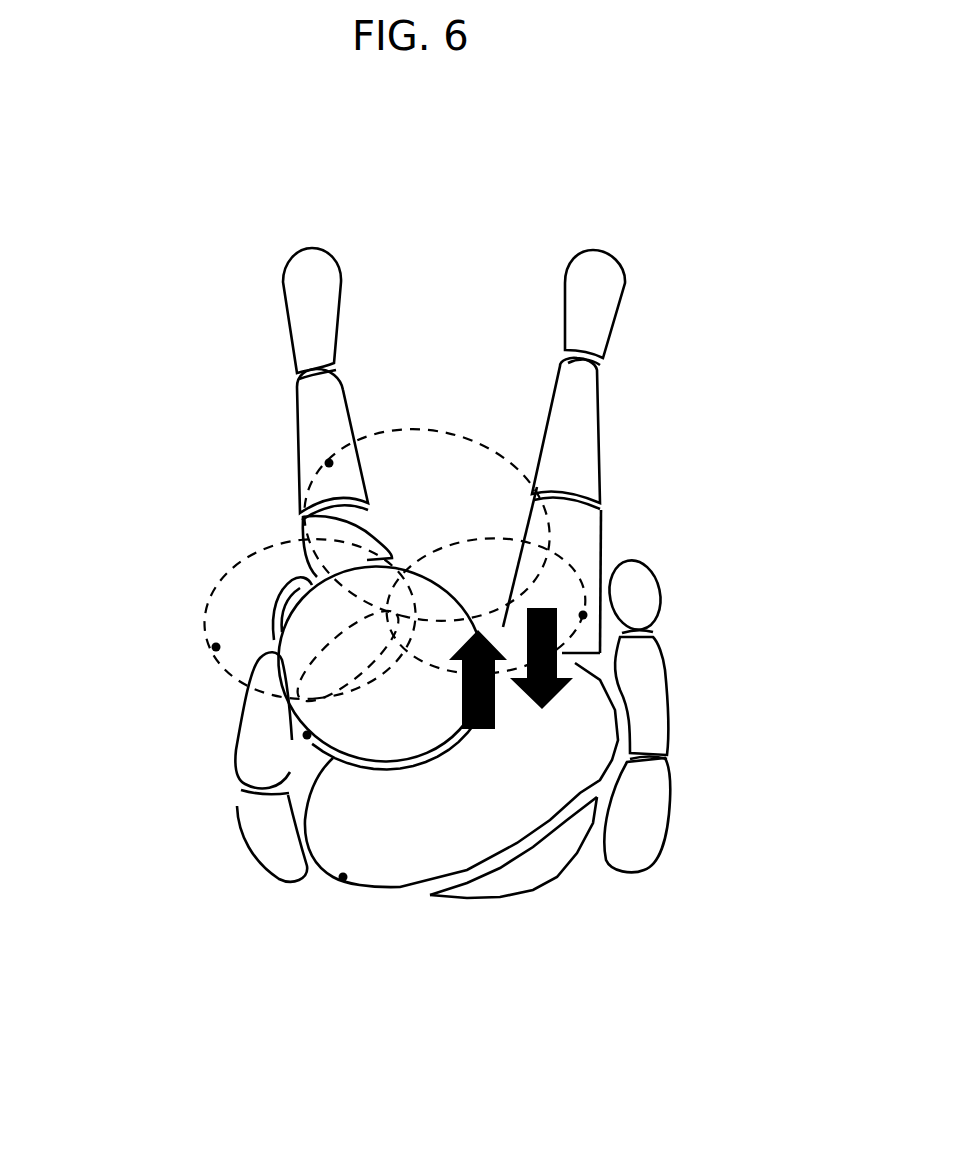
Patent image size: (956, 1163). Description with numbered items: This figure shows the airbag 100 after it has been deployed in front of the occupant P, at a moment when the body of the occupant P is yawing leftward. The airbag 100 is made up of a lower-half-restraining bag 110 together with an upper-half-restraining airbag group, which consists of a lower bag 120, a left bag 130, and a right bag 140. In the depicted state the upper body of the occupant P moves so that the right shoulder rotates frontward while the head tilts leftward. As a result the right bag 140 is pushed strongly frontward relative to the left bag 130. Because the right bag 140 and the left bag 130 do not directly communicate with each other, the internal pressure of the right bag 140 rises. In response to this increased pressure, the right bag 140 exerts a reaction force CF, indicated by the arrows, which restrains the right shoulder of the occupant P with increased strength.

The airbag 100 is at (430, 390).
The lower-half-restraining bag 110 is at (329, 463).
The lower bag 120 is at (307, 735).
The left bag 130 is at (216, 647).
The right bag 140 is at (583, 615).
The occupant P is at (343, 877).
The reaction force CF is at (520, 680).